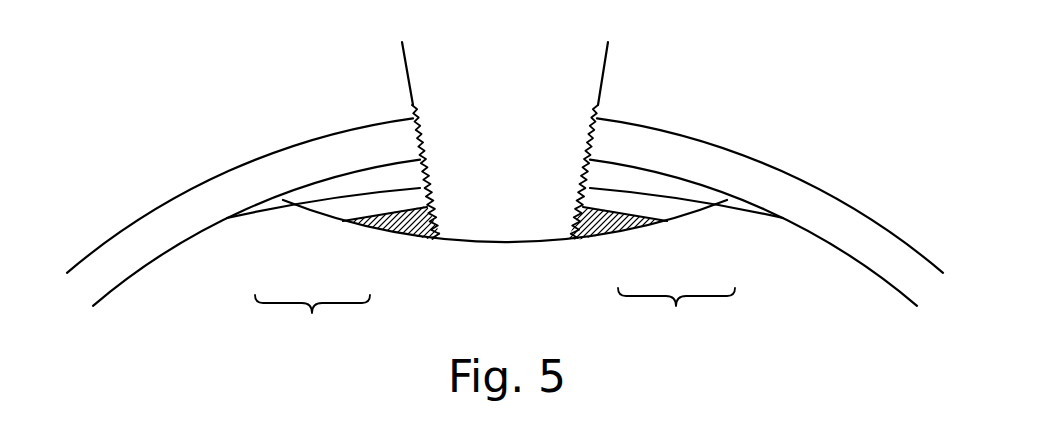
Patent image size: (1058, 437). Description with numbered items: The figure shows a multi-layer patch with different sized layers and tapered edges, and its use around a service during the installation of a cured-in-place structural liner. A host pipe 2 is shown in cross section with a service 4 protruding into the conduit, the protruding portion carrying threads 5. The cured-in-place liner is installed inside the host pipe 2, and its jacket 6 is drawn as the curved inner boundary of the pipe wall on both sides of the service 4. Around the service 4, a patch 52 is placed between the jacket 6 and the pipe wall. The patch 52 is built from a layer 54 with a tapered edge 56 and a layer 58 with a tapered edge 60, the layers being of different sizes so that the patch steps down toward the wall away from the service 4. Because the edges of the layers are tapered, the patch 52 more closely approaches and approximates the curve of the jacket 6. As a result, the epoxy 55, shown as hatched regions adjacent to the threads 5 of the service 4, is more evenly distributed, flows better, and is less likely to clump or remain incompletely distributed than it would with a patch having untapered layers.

The host pipe 2 is at (851, 208).
The service 4 is at (602, 80).
The threads 5 is at (423, 170).
The outer jacket 6 is at (843, 253).
The patch 52 is at (495, 324).
The layer 54 is at (300, 203).
The epoxy 55 is at (395, 234).
The tapered edge 56 is at (283, 215).
The layer 58 is at (358, 208).
The tapered edge 60 is at (335, 216).